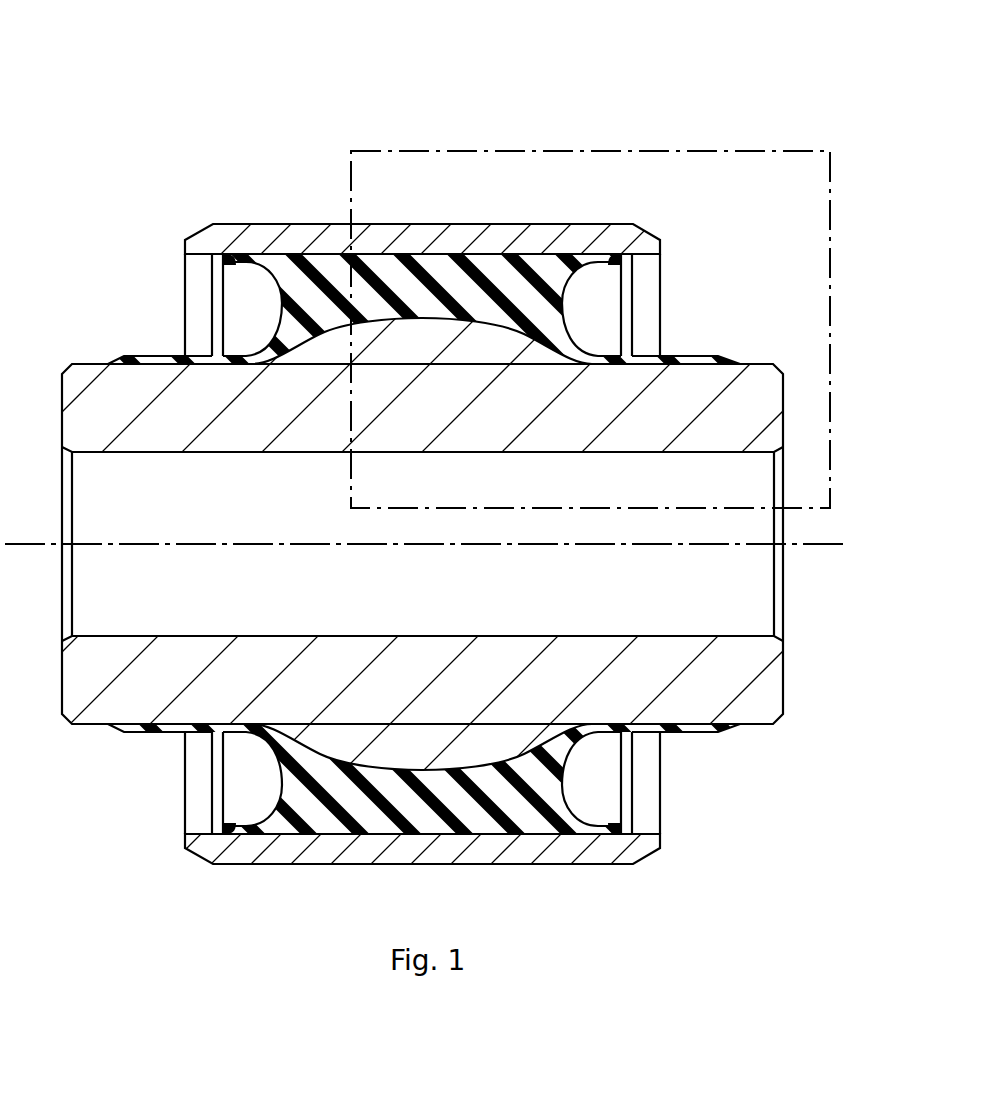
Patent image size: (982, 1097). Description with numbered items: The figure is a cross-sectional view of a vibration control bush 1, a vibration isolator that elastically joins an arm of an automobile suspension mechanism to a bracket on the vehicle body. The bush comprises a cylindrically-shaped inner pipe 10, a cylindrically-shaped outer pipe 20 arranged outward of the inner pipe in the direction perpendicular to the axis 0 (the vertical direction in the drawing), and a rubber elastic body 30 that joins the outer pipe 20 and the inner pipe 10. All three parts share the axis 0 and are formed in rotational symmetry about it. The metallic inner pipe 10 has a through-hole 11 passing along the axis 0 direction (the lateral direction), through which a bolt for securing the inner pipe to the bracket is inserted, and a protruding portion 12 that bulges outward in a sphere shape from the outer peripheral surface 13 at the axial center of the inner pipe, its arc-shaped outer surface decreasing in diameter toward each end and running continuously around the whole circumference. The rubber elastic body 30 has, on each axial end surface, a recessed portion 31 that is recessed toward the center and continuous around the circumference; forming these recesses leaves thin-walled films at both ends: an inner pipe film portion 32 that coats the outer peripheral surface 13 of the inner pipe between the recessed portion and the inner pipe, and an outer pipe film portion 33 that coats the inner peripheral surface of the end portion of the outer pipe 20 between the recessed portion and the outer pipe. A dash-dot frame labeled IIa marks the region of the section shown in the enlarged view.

The vibration control bush 1 is at (122, 112).
The axis 0 is at (818, 544).
The inner pipe 10 is at (789, 399).
The through-hole 11 is at (738, 637).
The protruding portion 12 is at (417, 337).
The outer peripheral surface 13 is at (739, 362).
The outer pipe 20 is at (497, 232).
The rubber elastic body 30 is at (243, 308).
The recessed portion 31 is at (597, 307).
The inner pipe film portion 32 is at (645, 360).
The outer pipe film portion 33 is at (596, 260).
The enlarged section region IIa is at (703, 151).